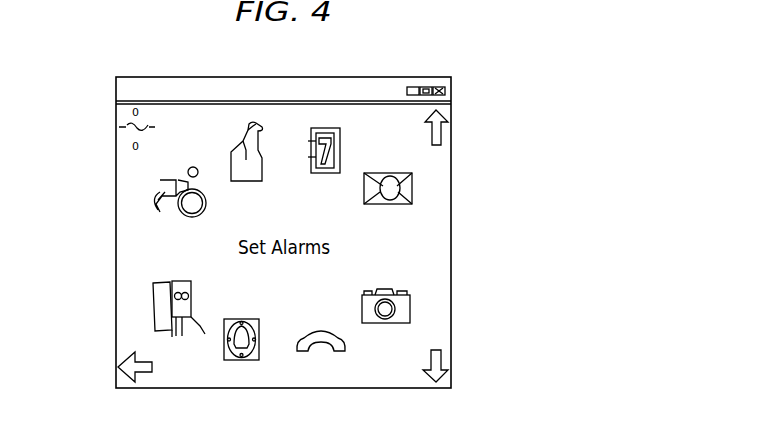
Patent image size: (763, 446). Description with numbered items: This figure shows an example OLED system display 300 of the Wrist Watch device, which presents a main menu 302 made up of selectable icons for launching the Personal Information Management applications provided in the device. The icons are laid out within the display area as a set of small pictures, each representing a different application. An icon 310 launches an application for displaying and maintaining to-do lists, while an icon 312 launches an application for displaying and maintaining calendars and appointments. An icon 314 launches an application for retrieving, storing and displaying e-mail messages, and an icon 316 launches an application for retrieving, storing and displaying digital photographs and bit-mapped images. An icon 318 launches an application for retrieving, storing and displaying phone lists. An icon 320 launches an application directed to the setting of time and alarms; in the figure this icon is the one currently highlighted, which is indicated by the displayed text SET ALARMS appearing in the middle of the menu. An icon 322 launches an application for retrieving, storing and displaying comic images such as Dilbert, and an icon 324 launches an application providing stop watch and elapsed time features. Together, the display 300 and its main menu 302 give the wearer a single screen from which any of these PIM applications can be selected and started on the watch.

The OLED system display 300 is at (82, 72).
The main menu 302 is at (385, 77).
The icon for to-do lists application 310 is at (258, 170).
The icon for calendars and appointments application 312 is at (341, 135).
The icon for e-mail application 314 is at (402, 205).
The icon for digital photographs application 316 is at (385, 325).
The icon for phone lists application 318 is at (316, 330).
The icon for time and alarms application 320 is at (237, 318).
The icon for comic images application 322 is at (181, 277).
The icon for stop watch application 324 is at (172, 178).